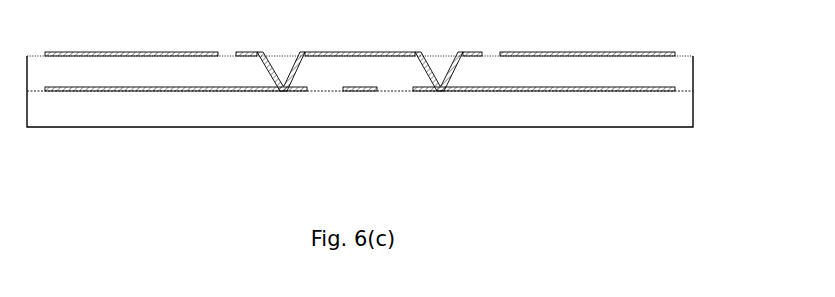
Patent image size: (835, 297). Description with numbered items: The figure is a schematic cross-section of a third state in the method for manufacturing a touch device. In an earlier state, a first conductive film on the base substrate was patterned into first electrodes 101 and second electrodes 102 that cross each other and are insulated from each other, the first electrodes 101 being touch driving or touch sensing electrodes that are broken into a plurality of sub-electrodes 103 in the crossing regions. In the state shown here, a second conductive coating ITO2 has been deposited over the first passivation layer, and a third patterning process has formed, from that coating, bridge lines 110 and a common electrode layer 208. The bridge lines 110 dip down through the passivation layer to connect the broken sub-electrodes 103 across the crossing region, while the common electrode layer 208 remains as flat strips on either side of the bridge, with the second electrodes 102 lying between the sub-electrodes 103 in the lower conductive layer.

The first electrodes 101 is at (445, 173).
The second electrodes 102 is at (345, 92).
The sub-electrodes 103 is at (178, 92).
The bridge lines 110 is at (371, 51).
The common electrode layer 208 is at (175, 51).
The second conductive coating ITO2 is at (238, 55).